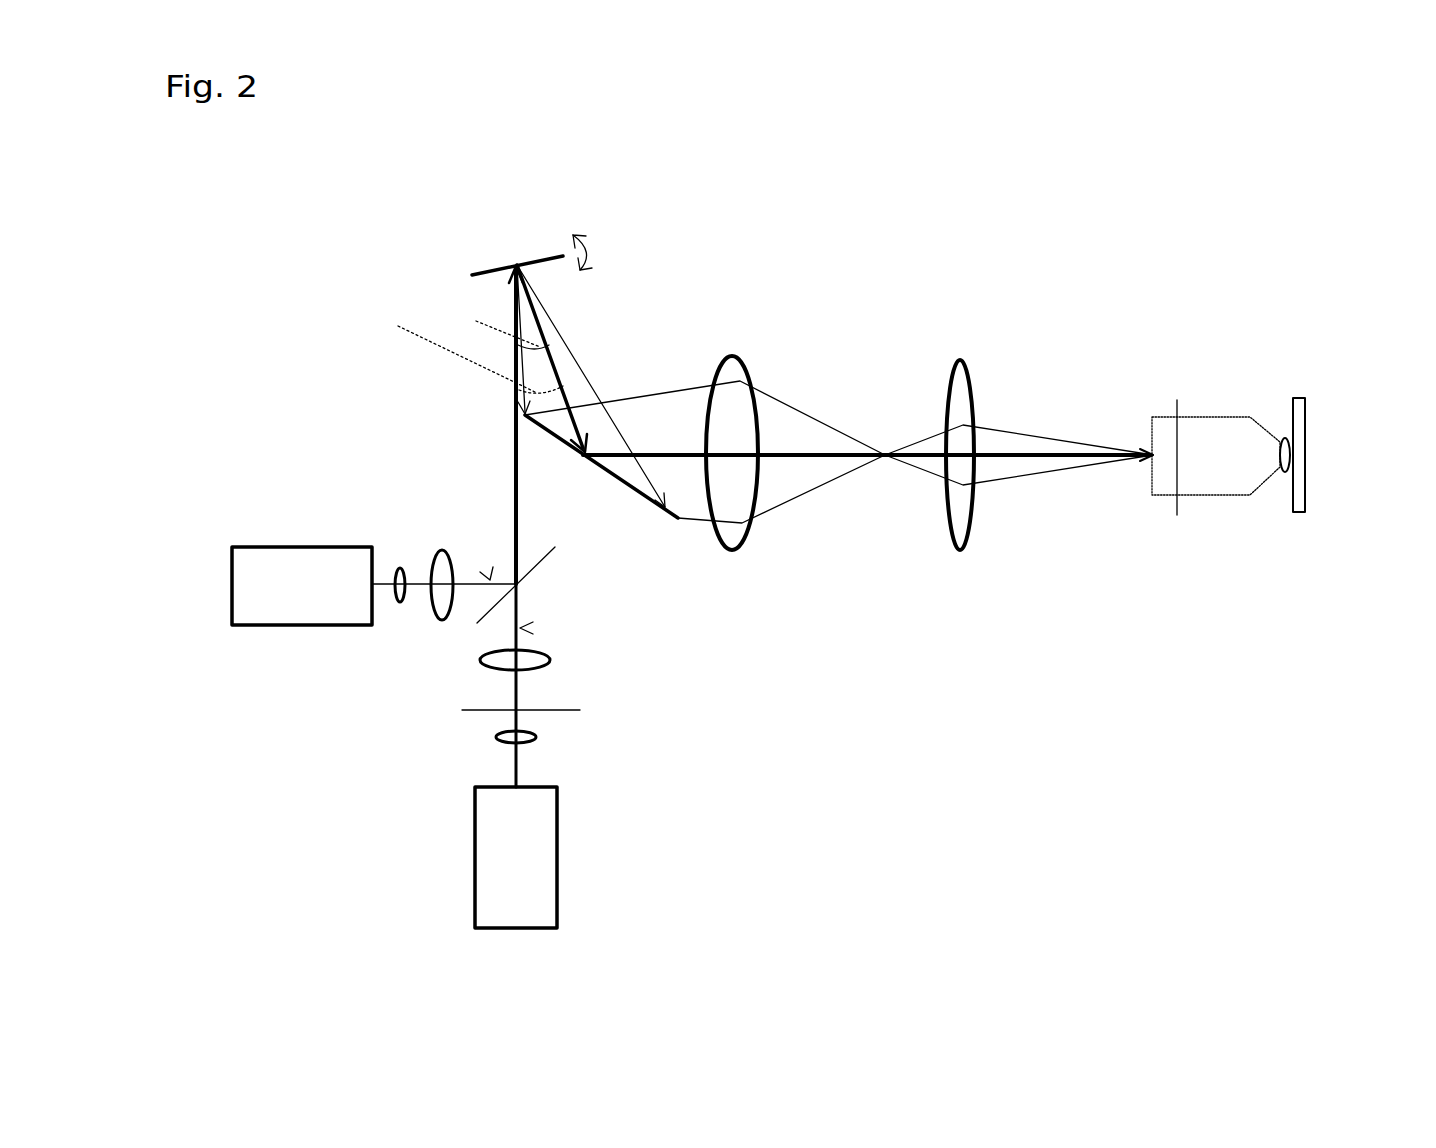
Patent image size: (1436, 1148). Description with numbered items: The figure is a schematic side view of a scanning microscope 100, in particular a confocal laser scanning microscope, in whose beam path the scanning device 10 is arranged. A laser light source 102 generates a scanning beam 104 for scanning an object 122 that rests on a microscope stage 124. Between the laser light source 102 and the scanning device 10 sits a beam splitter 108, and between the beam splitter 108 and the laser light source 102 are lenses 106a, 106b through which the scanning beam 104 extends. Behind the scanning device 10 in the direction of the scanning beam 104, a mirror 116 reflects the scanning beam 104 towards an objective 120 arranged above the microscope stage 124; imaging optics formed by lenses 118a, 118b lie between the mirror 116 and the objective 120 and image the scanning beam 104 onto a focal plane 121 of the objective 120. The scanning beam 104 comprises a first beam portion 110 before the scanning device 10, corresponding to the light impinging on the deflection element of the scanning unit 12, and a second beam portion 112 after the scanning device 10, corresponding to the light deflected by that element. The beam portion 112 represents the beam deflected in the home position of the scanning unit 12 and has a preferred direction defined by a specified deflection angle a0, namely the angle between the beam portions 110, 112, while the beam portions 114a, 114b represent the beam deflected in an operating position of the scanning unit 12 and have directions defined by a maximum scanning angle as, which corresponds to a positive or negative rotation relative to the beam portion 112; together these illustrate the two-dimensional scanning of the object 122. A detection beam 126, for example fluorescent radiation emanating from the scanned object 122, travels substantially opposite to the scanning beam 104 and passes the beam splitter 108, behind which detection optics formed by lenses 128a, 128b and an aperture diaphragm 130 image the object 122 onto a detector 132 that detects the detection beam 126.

The scanning device 10 is at (545, 245).
The scanning unit 12 is at (483, 270).
The scanning microscope 100 is at (388, 826).
The laser light source 102 is at (262, 625).
The scanning beam 104 is at (490, 580).
The lens 106a is at (400, 568).
The lens 106b is at (442, 550).
The beam splitter 108 is at (540, 562).
The first beam portion 110 is at (514, 440).
The second beam portion 112 is at (600, 385).
The beam portion 114a is at (522, 385).
The beam portion 114b is at (583, 370).
The mirror 116 is at (603, 468).
The lens 118a is at (733, 550).
The lens 118b is at (960, 550).
The objective 120 is at (1205, 495).
The focal plane 121 is at (1177, 400).
The object 122 is at (1285, 437).
The microscope stage 124 is at (1301, 410).
The detection beam 126 is at (520, 628).
The lens 128a is at (550, 660).
The lens 128b is at (536, 737).
The aperture diaphragm 130 is at (580, 710).
The detector 132 is at (557, 858).
The deflection angle a0 is at (461, 345).
The maximum scanning angle as is at (492, 324).